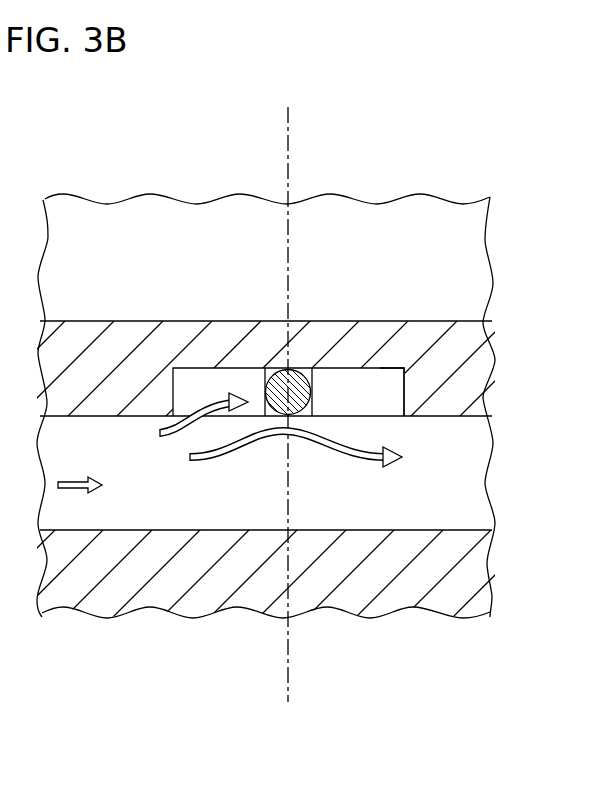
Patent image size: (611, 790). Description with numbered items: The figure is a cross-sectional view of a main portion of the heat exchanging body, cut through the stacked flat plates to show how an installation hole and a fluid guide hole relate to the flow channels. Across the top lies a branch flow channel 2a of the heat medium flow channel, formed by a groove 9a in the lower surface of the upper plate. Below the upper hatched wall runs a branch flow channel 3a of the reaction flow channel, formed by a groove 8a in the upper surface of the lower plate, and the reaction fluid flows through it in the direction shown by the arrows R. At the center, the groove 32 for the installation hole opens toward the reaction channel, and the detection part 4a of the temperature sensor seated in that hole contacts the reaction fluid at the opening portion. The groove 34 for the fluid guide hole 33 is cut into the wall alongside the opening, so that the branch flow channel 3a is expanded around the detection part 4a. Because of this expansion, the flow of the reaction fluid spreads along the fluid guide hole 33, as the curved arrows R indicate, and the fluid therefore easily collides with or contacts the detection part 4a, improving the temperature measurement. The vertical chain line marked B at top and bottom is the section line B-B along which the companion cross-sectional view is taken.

The branch flow channel of the heat medium flow channel 2a is at (447, 245).
The groove for the branch flow channel of the heat medium flow channel 9a is at (433, 318).
The branch flow channel of the reaction flow channel 3a is at (453, 488).
The groove for the branch flow channel of the reaction flow channel 8a is at (458, 522).
The fluid guide hole 33 is at (357, 398).
The groove for the fluid guide hole 34 is at (377, 372).
The detection part of the temperature sensor 4a is at (283, 370).
The groove for the installation hole 32 is at (300, 370).
The direction of flow of the reactant R is at (75, 478).
The line B- B is at (289, 409).